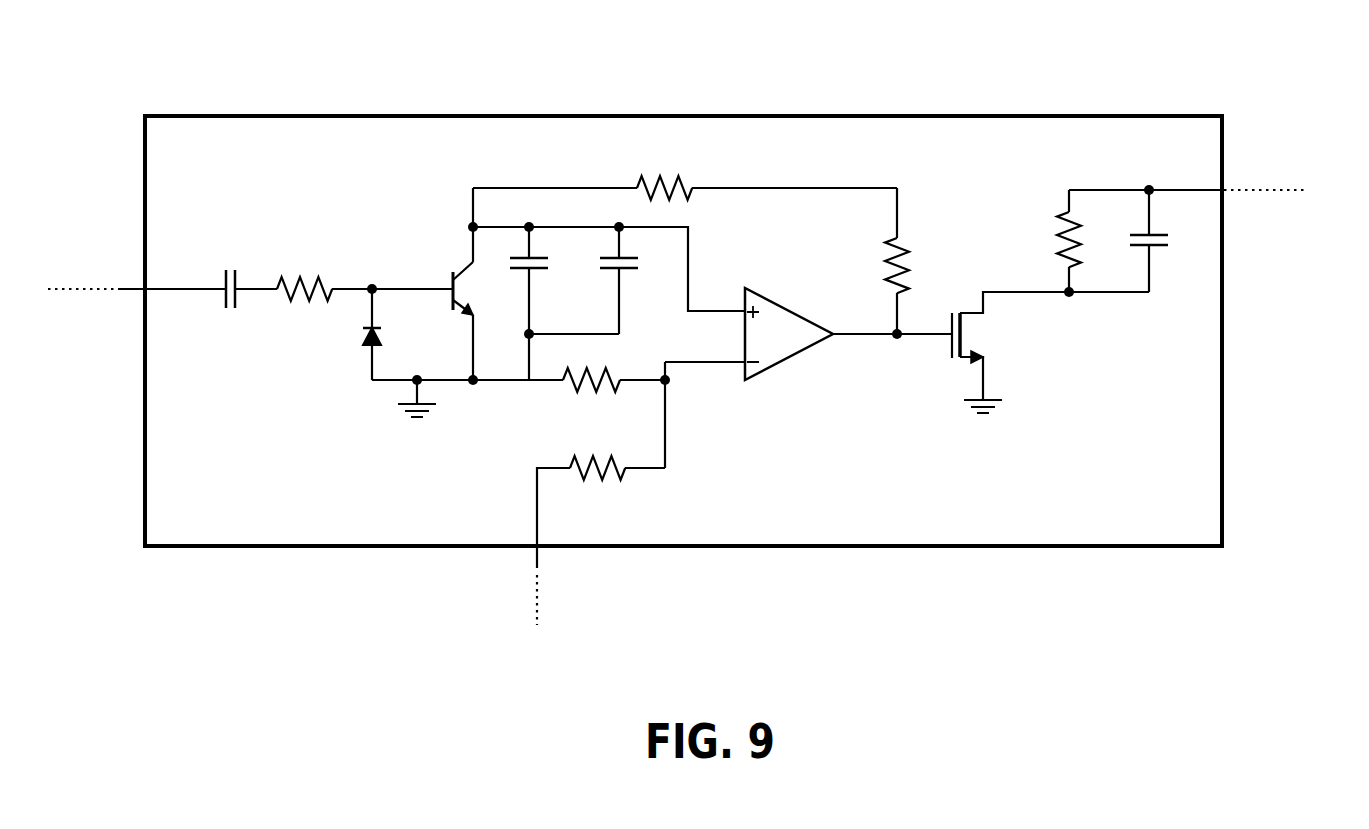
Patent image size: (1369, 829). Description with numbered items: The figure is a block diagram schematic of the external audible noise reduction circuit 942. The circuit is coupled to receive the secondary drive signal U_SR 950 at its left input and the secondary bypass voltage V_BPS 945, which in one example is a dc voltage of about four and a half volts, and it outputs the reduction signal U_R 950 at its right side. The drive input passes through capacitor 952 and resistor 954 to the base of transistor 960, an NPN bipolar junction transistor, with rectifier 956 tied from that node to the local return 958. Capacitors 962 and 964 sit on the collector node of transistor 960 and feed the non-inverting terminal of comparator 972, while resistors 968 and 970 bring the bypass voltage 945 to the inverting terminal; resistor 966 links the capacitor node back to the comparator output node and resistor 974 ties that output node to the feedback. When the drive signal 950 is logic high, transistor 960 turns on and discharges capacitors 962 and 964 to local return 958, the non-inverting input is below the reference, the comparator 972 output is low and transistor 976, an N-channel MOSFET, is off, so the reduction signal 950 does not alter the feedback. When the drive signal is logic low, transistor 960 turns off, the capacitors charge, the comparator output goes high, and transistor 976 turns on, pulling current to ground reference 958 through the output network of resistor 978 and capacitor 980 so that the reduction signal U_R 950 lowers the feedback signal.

The audible noise reduction circuit 942 is at (206, 552).
The secondary bypass voltage 945 is at (575, 642).
The secondary drive signal / reduction signal 950 is at (84, 256).
The capacitor 952 is at (232, 315).
The resistor 954 is at (305, 270).
The rectifier 956 is at (362, 341).
The local return 958 is at (421, 425).
The transistor 960 is at (451, 303).
The capacitor 962 is at (555, 268).
The capacitor 964 is at (648, 268).
The resistor 966 is at (635, 180).
The resistor 968 is at (595, 392).
The resistor 970 is at (622, 478).
The comparator 972 is at (802, 360).
The resistor 974 is at (887, 268).
The transistor 976 is at (961, 309).
The resistor 978 is at (1047, 230).
The capacitor 980 is at (1172, 240).